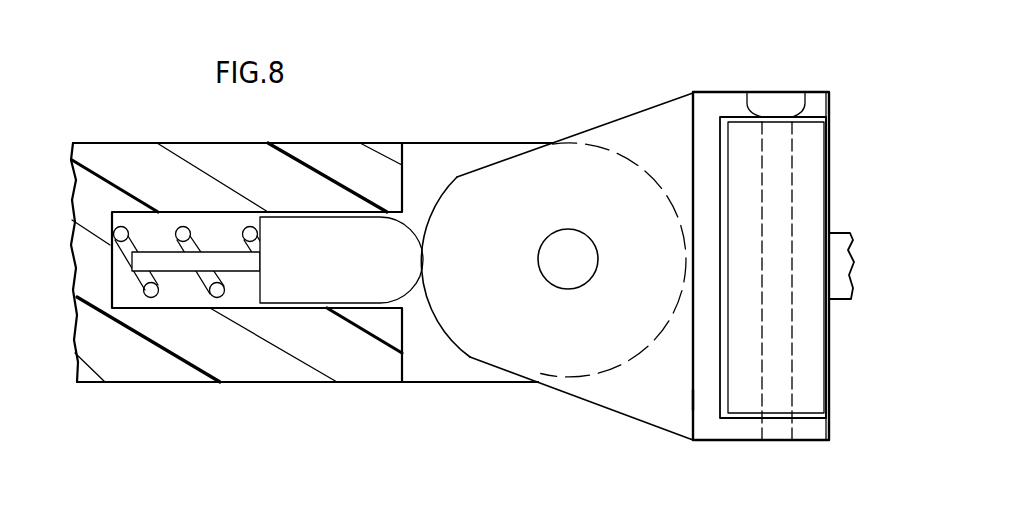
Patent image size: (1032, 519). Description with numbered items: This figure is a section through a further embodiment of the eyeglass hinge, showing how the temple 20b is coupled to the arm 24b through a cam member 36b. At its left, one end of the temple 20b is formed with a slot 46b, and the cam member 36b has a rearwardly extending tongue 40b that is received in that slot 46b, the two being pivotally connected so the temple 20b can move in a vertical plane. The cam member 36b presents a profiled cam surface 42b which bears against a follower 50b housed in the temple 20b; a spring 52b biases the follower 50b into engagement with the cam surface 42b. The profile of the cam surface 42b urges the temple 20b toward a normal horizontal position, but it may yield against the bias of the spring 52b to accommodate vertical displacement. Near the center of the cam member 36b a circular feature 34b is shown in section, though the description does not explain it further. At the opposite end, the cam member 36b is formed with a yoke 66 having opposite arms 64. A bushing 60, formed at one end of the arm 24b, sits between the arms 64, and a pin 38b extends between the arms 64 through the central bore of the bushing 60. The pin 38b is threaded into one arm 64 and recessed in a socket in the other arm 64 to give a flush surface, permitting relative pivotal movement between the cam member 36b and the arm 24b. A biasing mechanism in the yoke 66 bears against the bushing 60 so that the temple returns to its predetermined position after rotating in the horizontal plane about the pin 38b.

The temple 20b is at (126, 367).
The spring 52b is at (118, 224).
The follower 50b is at (287, 237).
The slot 46b is at (433, 160).
The cam surface 42b is at (453, 180).
The tongue 40b is at (475, 363).
The cam member 36b is at (557, 256).
The pivot pin 34b is at (552, 262).
The pin 38b is at (767, 98).
The arms 64 is at (817, 100).
The yoke 66 is at (693, 398).
The bushing 60 is at (743, 403).
The arm 24b is at (840, 300).